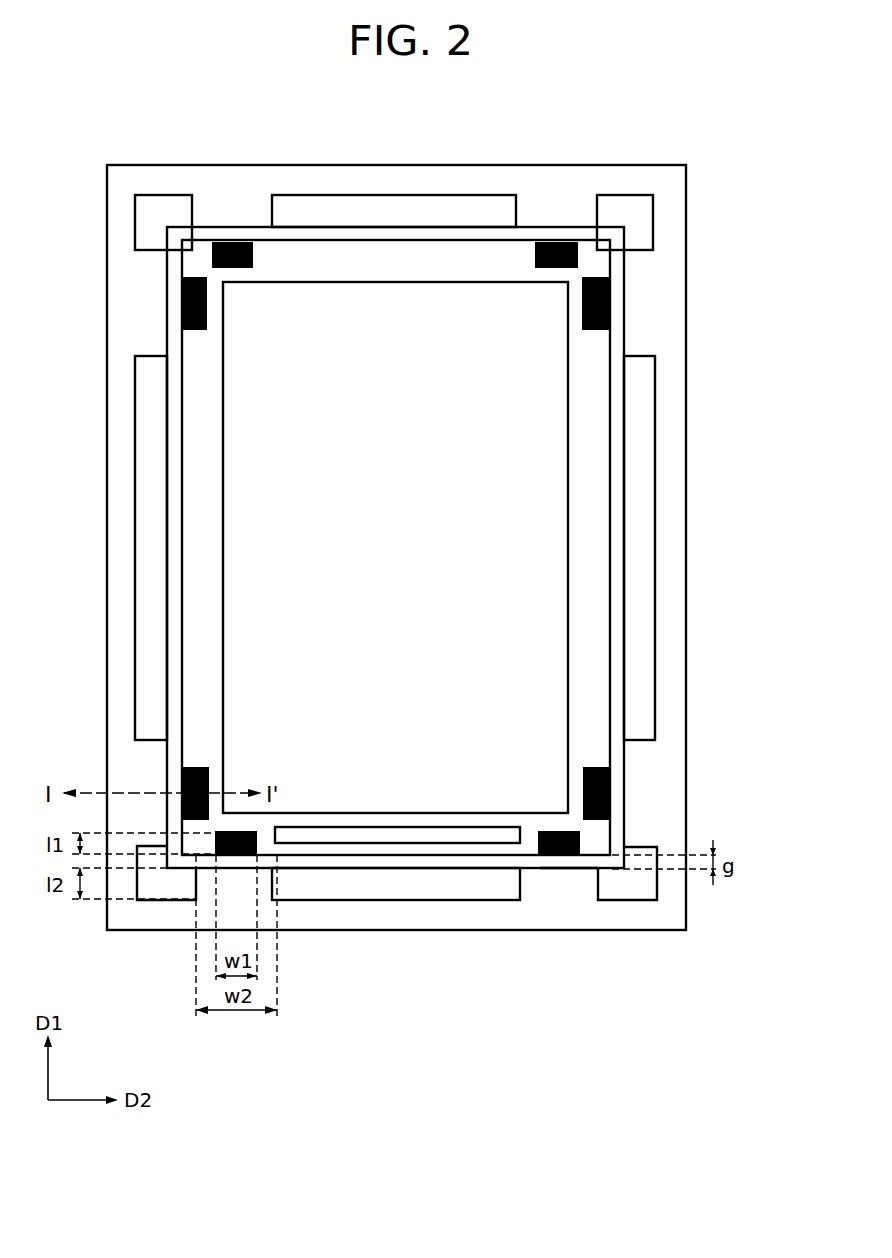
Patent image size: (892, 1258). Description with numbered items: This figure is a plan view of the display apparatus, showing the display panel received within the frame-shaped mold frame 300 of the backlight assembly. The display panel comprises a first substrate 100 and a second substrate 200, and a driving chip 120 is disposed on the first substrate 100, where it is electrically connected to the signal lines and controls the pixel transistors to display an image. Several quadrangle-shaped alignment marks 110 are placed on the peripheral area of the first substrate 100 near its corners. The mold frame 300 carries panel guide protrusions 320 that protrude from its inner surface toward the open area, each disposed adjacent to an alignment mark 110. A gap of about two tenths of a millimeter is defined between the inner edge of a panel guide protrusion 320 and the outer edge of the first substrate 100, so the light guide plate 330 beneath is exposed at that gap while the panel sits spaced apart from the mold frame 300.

The first substrate 100 is at (590, 632).
The alignment mark 110 is at (612, 788).
The driving chip 120 is at (393, 833).
The second substrate 200 is at (538, 538).
The mold frame 300 is at (687, 458).
The panel guide protrusion 320 is at (627, 847).
The light guide plate 330 is at (570, 860).